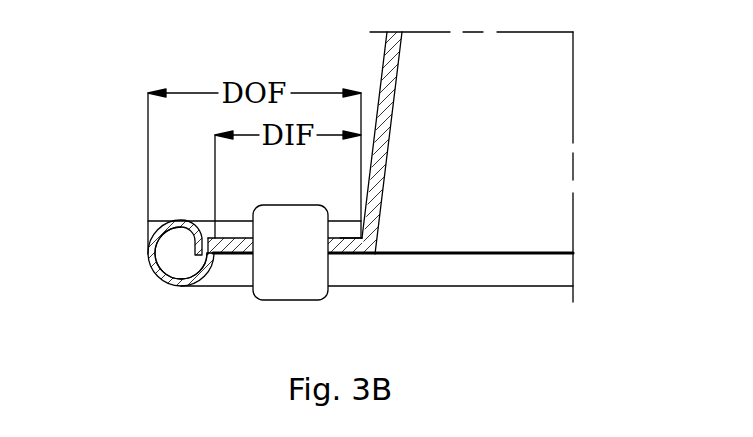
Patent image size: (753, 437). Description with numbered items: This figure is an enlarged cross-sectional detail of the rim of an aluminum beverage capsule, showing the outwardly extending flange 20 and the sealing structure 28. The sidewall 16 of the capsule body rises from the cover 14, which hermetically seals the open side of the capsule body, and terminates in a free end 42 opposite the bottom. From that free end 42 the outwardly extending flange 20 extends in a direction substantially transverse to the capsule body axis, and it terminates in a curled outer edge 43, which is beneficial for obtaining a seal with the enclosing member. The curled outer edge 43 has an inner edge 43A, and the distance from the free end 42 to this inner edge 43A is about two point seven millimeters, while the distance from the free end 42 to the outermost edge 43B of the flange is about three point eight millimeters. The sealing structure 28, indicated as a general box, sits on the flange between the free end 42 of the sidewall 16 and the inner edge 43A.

The cover 14 is at (462, 255).
The sidewall 16 is at (392, 68).
The outwardly extending flange 20 is at (345, 246).
The sealing structure 28 is at (290, 220).
The free end 42 is at (368, 246).
The curled outer edge 43 is at (168, 283).
The inner edge 43A is at (215, 255).
The outermost edge 43B is at (148, 255).